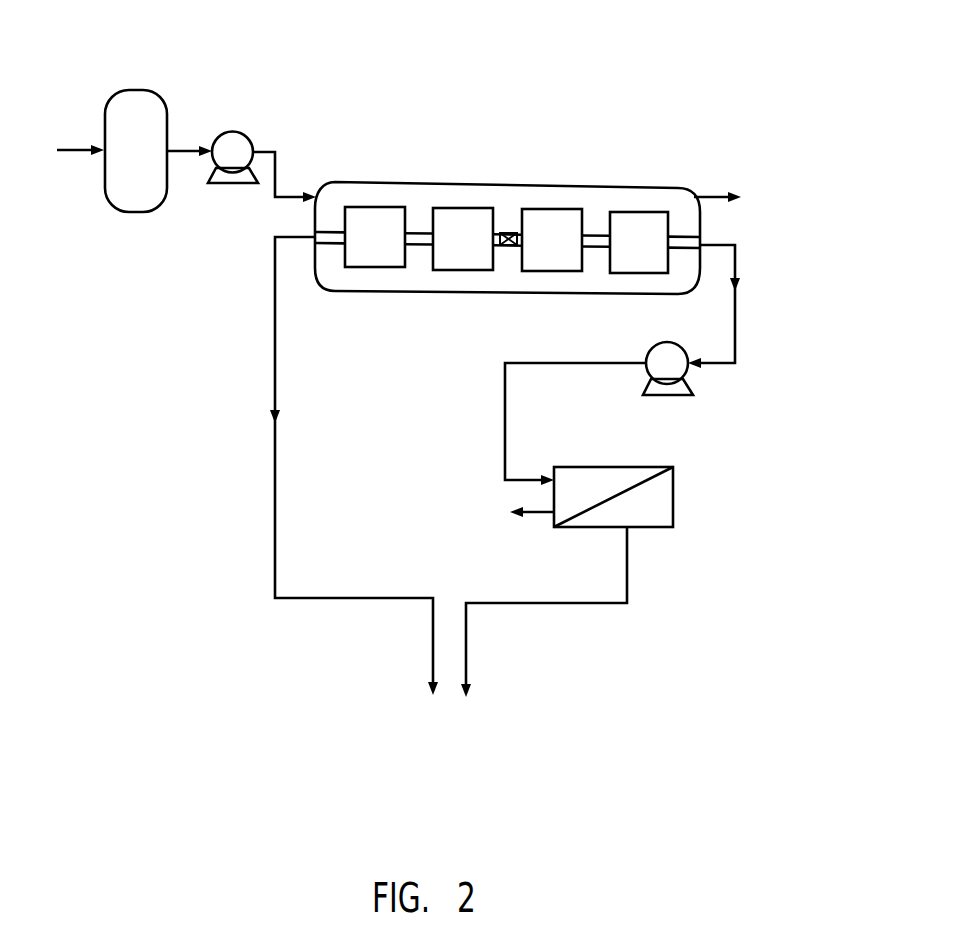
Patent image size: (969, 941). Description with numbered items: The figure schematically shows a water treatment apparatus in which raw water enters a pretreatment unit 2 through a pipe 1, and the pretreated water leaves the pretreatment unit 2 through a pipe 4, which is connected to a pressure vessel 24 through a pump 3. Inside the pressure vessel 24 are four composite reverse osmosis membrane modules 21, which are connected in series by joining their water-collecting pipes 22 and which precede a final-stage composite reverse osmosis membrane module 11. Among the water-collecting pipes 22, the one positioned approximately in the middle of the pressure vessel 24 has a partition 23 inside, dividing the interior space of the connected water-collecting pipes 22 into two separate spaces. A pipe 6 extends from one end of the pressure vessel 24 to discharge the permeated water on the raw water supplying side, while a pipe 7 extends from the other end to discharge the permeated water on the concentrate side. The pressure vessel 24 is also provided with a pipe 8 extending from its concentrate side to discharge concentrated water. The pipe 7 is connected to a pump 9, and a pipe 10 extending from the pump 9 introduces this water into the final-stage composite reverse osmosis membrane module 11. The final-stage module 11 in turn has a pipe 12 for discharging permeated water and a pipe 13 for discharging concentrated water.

The pipe 1 is at (72, 150).
The pretreatment unit 2 is at (138, 90).
The pump 3 is at (237, 131).
The pipe 4 is at (293, 197).
The pipe 6 is at (275, 340).
The pipe 7 is at (735, 322).
The pipe 8 is at (703, 197).
The pump 9 is at (650, 350).
The pipe 10 is at (575, 365).
The final-stage composite reverse osmosis membrane module 11 is at (673, 493).
The pipe 12 is at (627, 557).
The pipe 13 is at (543, 513).
The composite reverse osmosis membrane modules 21 is at (367, 207).
The water-collecting pipes 22 is at (415, 231).
The partition 23 is at (507, 233).
The pressure vessel 24 is at (626, 189).